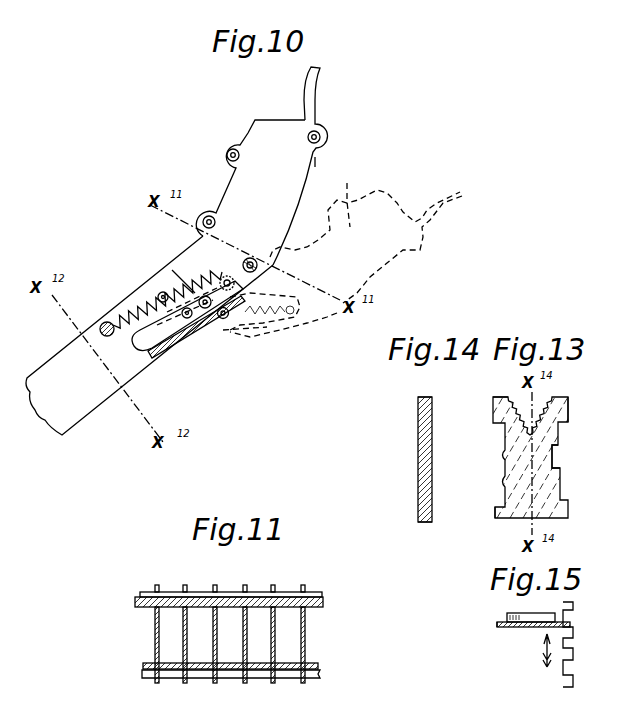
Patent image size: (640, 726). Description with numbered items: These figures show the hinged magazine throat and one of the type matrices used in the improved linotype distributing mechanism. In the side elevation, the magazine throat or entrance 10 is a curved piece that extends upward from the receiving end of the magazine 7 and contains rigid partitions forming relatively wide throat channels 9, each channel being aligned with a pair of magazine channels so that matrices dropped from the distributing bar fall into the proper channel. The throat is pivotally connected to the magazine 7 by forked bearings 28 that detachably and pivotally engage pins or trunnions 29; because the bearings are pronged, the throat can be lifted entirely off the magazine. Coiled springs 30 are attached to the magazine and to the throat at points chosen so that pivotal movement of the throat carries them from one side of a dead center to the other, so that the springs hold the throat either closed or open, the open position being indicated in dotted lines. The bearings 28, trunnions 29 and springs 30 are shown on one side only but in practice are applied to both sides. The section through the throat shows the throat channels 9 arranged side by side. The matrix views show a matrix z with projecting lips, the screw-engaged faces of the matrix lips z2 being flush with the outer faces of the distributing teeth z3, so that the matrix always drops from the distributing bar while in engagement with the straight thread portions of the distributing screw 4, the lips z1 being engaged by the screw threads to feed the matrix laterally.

In FIG. 10, the magazine throat or entrance 10 is at (298, 170).
In FIG. 11, the magazine throat or entrance 10 is at (230, 680).
In FIG. 10, the magazine 7 is at (149, 335).
In FIG. 10, the coiled springs 30 is at (135, 310).
In FIG. 10, the forked bearings 28 is at (178, 348).
In FIG. 10, the pins or trunnions 29 is at (197, 336).
In FIG. 11, the throat channels 9 is at (225, 628).
In FIG. 14, the matrices z is at (418, 465).
In FIG. 13, the matrices z is at (560, 497).
In FIG. 15, the matrices z is at (500, 620).
In FIG. 14, the projecting lips z1 is at (433, 510).
In FIG. 13, the projecting lips z1 is at (568, 407).
In FIG. 15, the projecting lips z1 is at (595, 627).
In FIG. 13, the matrix lips z2 is at (553, 457).
In FIG. 14, the distributing teeth z3 is at (427, 400).
In FIG. 13, the distributing teeth z3 is at (508, 395).
In FIG. 15, the distributing teeth z3 is at (513, 627).
In FIG. 15, the distributing screw 4 is at (568, 675).